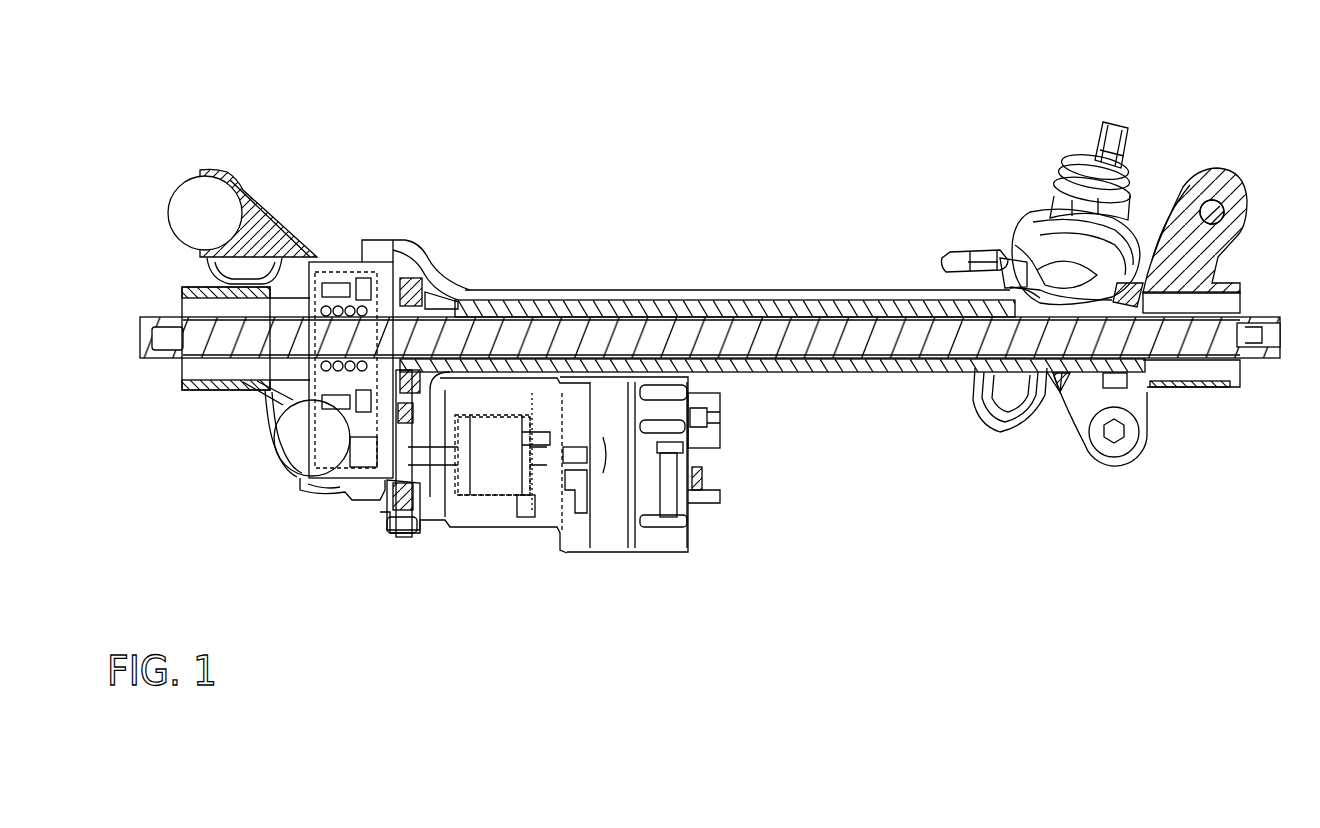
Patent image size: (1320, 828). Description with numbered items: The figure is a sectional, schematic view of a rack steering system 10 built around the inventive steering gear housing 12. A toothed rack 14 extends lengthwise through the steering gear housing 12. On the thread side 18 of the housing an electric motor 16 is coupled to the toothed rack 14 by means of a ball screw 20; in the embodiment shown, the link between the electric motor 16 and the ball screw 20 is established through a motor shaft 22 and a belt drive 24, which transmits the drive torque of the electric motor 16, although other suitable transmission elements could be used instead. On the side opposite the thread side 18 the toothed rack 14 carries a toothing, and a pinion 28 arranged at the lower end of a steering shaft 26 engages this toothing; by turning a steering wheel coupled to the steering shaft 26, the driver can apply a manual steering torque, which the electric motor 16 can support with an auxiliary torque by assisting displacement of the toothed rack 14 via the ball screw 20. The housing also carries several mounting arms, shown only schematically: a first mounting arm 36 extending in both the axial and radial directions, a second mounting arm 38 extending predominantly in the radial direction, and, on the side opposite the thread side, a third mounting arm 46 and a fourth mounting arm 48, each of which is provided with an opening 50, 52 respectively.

The rack steering system 10 is at (772, 206).
The steering gear housing 12 is at (711, 292).
The toothed rack 14 is at (821, 333).
The electric motor 16 is at (495, 511).
The thread side 18 is at (307, 240).
The ball screw 20 is at (360, 266).
The motor shaft 22 is at (433, 458).
The belt drive 24 is at (329, 490).
The steering shaft 26 is at (1114, 138).
The pinion 28 is at (1020, 358).
The first mounting arm 36 is at (193, 203).
The second mounting arm 38 is at (292, 447).
The third mounting arm 46 is at (1132, 432).
The fourth mounting arm 48 is at (1207, 190).
The opening 50 is at (1113, 437).
The opening 52 is at (1220, 204).